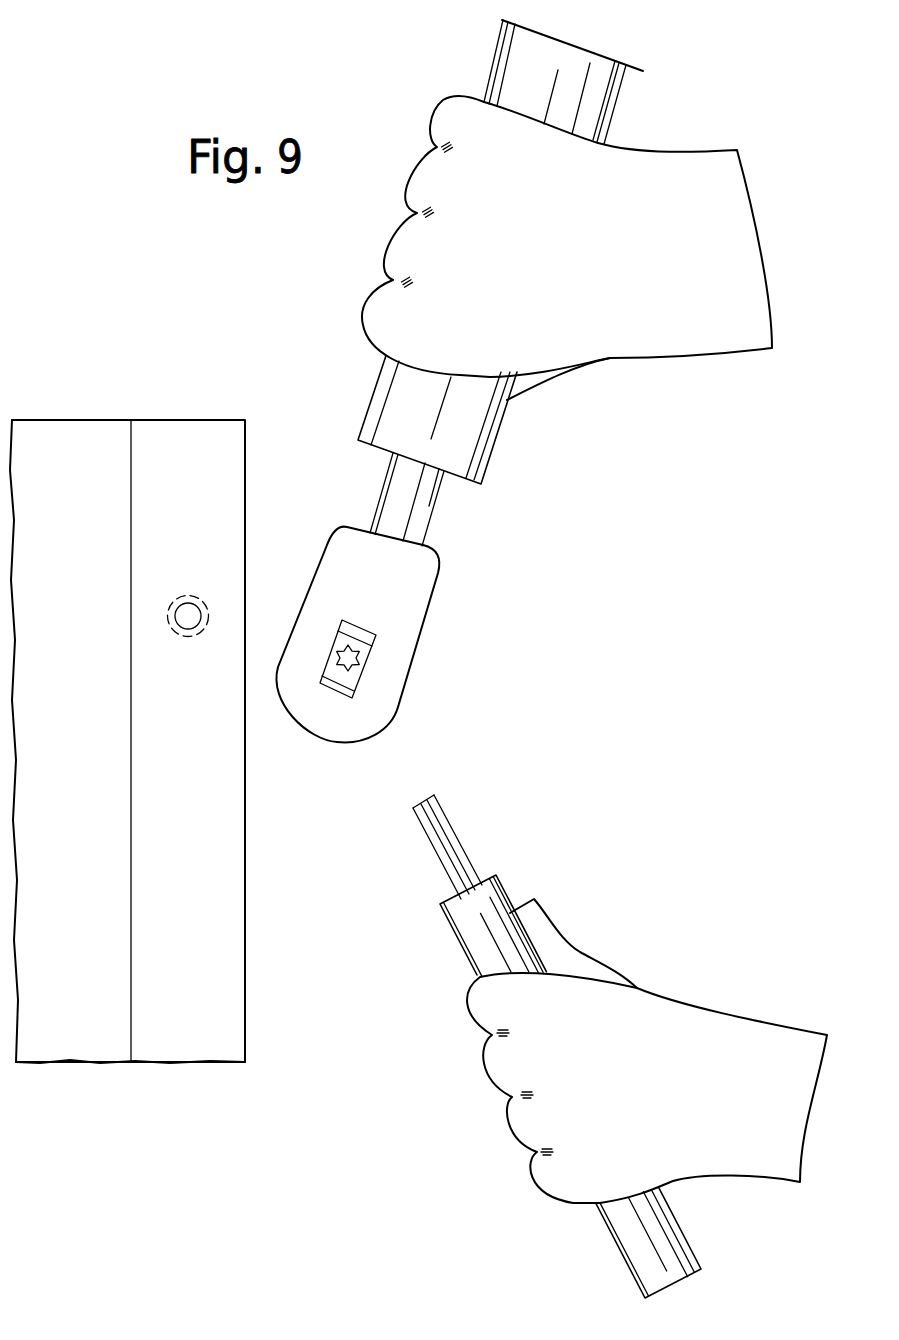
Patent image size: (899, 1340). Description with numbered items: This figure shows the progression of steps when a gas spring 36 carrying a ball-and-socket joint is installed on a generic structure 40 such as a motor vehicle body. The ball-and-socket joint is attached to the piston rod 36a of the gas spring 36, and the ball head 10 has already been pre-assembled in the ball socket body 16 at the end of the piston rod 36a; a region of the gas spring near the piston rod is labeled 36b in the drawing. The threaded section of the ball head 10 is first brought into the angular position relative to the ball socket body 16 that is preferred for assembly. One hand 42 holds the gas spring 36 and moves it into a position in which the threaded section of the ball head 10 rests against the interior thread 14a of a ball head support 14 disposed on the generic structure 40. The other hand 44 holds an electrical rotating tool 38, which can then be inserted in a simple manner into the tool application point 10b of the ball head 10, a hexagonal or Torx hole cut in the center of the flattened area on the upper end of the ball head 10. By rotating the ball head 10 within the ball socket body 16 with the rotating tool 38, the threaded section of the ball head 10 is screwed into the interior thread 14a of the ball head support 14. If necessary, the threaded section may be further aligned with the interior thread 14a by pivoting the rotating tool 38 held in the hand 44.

The ball head 10 is at (348, 680).
The Torx hole 10b is at (358, 652).
The ball head support 14 is at (226, 483).
The interior thread 14a is at (176, 617).
The ball socket body 16 is at (418, 588).
The gas spring 36 is at (473, 423).
The piston rod 36a is at (408, 510).
The sleeve end 36b is at (392, 393).
The electrical rotating tool 38 is at (500, 920).
The generic structure 40 is at (78, 1032).
The hand 42 is at (675, 167).
The hand 44 is at (723, 1050).